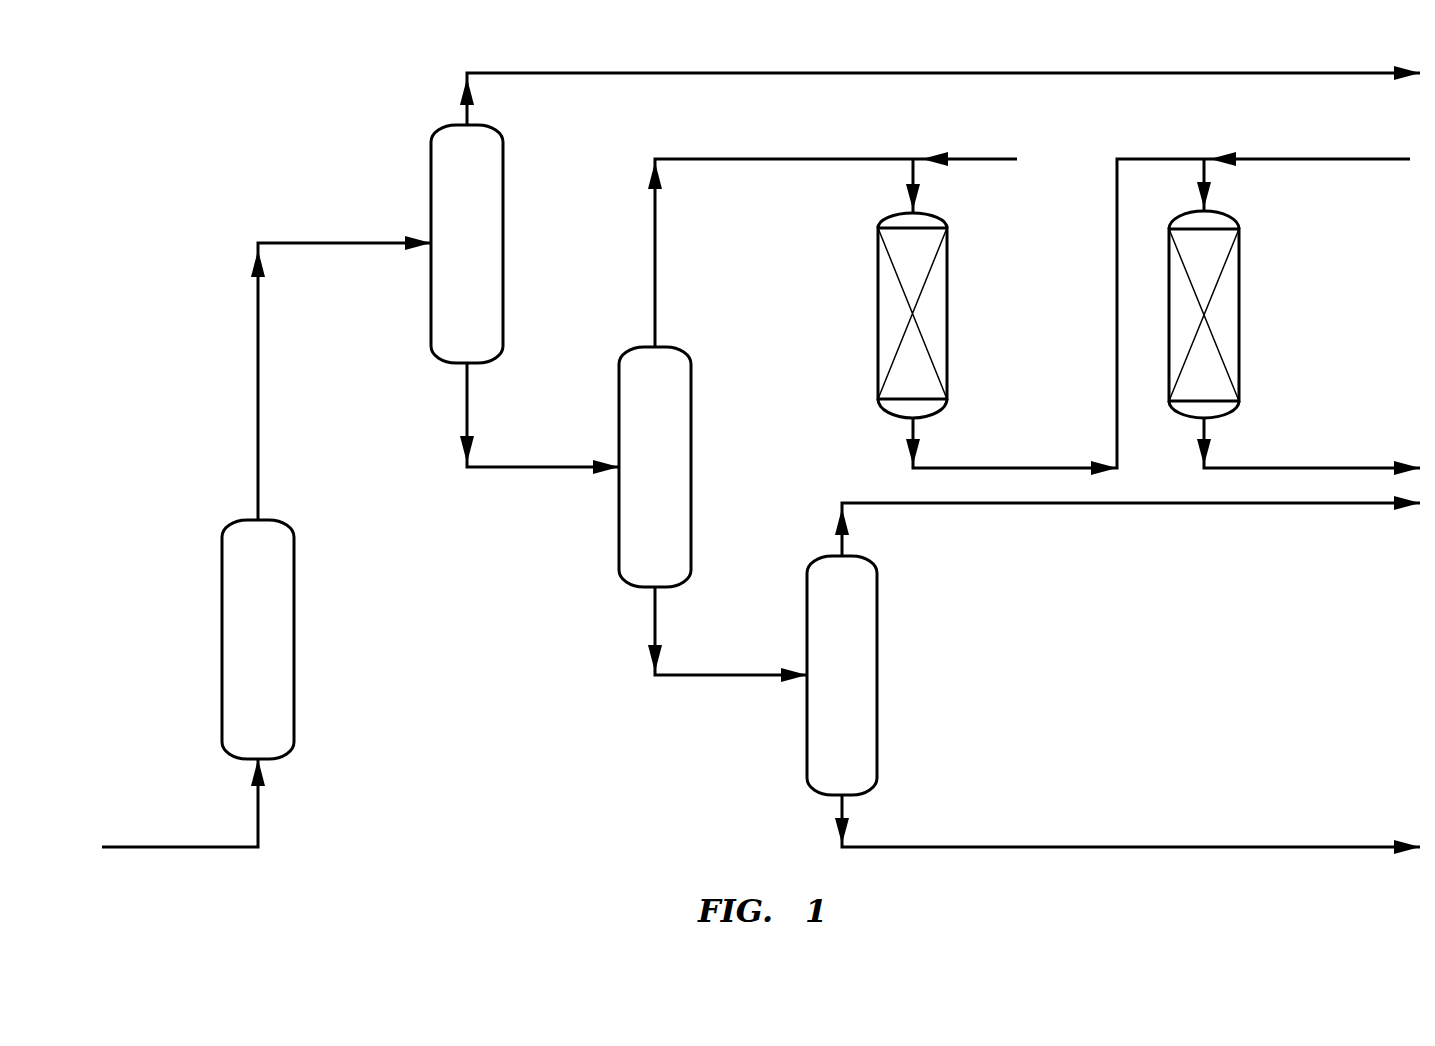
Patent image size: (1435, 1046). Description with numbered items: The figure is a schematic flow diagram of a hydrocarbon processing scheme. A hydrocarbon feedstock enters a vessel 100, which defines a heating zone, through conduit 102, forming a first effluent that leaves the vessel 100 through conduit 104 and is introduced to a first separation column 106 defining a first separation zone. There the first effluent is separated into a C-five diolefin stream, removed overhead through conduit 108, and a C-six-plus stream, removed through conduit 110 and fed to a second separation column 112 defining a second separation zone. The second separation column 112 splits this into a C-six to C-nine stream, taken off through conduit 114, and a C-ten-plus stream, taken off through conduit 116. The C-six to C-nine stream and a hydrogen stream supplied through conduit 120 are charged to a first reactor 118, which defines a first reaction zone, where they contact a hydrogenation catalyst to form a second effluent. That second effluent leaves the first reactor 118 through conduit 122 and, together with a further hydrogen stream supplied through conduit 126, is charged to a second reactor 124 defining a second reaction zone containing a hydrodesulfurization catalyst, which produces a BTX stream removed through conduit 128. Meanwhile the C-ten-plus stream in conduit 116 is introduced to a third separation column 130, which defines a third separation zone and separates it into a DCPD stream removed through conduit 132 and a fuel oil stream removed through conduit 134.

The vessel 100 is at (223, 606).
The conduit 102 is at (168, 846).
The conduit 104 is at (258, 365).
The first separation column 106 is at (432, 180).
The conduit 108 is at (597, 75).
The conduit 110 is at (510, 472).
The second separation column 112 is at (619, 383).
The conduit 114 is at (654, 245).
The conduit 116 is at (650, 613).
The first reactor 118 is at (878, 278).
The conduit 120 is at (982, 158).
The conduit 122 is at (1017, 467).
The second reactor 124 is at (1240, 277).
The conduit 126 is at (1324, 159).
The conduit 128 is at (1311, 468).
The third separation column 130 is at (878, 650).
The conduit 132 is at (1102, 505).
The conduit 134 is at (1025, 846).